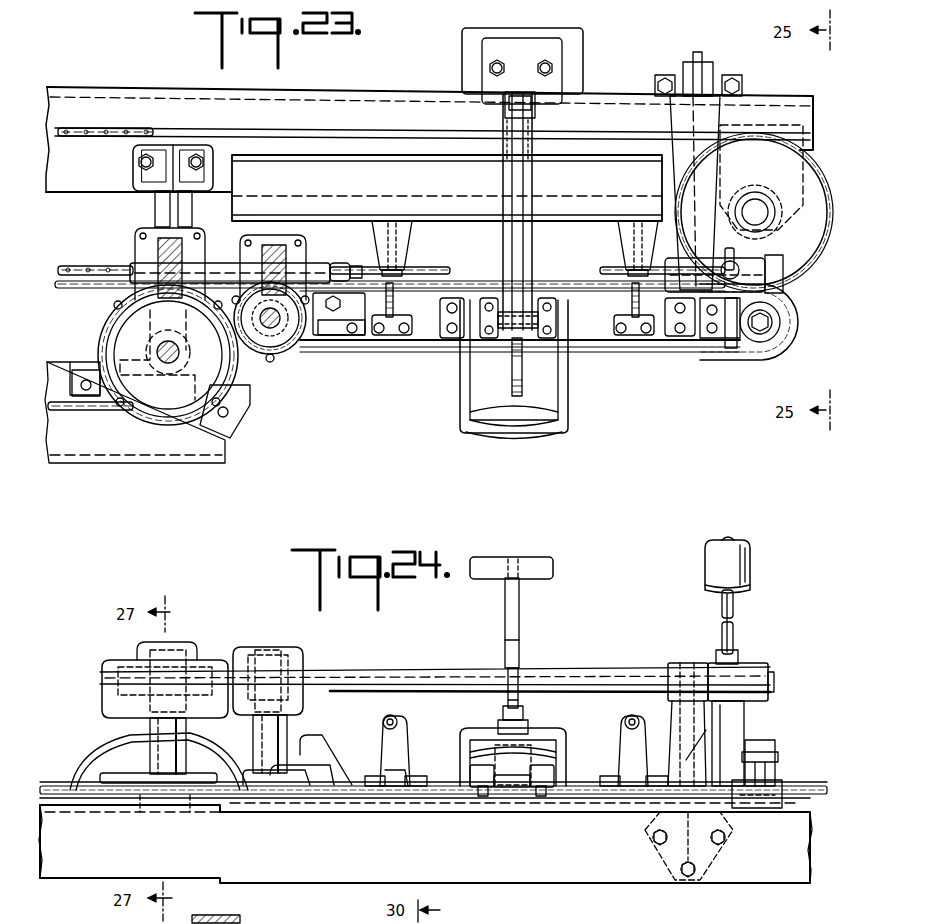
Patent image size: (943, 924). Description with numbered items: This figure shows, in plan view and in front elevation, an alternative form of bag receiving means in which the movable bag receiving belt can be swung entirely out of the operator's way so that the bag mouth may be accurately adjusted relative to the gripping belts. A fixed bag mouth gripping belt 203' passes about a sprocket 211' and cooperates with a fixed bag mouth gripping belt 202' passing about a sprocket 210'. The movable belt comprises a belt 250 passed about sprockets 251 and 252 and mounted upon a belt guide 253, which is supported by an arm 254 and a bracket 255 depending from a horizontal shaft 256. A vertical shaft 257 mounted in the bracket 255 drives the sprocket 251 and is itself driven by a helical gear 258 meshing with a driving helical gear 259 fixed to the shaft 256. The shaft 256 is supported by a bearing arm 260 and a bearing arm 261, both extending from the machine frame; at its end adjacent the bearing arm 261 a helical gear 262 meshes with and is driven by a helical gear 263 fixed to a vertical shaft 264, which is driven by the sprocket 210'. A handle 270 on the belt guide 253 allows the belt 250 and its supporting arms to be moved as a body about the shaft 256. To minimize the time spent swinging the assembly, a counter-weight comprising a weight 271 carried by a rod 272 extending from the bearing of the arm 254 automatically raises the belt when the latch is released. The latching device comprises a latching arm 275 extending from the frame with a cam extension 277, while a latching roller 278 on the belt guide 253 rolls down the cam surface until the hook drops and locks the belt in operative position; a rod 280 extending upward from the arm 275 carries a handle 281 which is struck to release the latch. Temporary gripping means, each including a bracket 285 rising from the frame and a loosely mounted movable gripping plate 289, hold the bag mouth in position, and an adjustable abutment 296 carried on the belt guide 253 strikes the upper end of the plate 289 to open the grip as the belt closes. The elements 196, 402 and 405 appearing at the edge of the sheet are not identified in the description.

In FIG. 24, the guide plate 196 is at (238, 915).
In FIG. 23, the fixed bag mouth gripping belt 202' is at (147, 412).
In FIG. 24, the fixed bag mouth gripping belt 202' is at (143, 716).
In FIG. 23, the fixed bag mouth gripping belt 203' is at (140, 120).
In FIG. 24, the fixed bag mouth gripping belt 203' is at (433, 775).
In FIG. 24, the sprocket 210' is at (158, 809).
In FIG. 23, the sprocket 211' is at (756, 208).
In FIG. 23, the belt 250 is at (392, 346).
In FIG. 24, the sprocket 251 is at (276, 797).
In FIG. 24, the sprocket 252 is at (760, 800).
In FIG. 23, the belt guide 253 is at (433, 340).
In FIG. 23, the arm 254 is at (722, 316).
In FIG. 24, the arm 254 is at (738, 724).
In FIG. 23, the bracket 255 is at (336, 340).
In FIG. 24, the bracket 255 is at (308, 757).
In FIG. 23, the horizontal shaft 256 is at (213, 265).
In FIG. 24, the horizontal shaft 256 is at (378, 678).
In FIG. 23, the vertical shaft 257 is at (268, 330).
In FIG. 23, the helical gear 258 is at (278, 328).
In FIG. 23, the driving helical gear 259 is at (276, 248).
In FIG. 23, the bearing arm 260 is at (700, 117).
In FIG. 24, the bearing arm 260 is at (678, 665).
In FIG. 23, the bearing arm 261 is at (152, 206).
In FIG. 23, the helical gear 262 is at (150, 244).
In FIG. 23, the helical gear 263 is at (132, 329).
In FIG. 23, the vertical shaft 264 is at (180, 352).
In FIG. 23, the handle 270 is at (512, 432).
In FIG. 24, the handle 270 is at (537, 737).
In FIG. 24, the weight 271 is at (750, 570).
In FIG. 23, the rod 272 is at (735, 250).
In FIG. 24, the rod 272 is at (736, 628).
In FIG. 23, the latching arm 275 is at (527, 182).
In FIG. 24, the cam extension 277 is at (521, 688).
In FIG. 23, the latching roller 278 is at (532, 308).
In FIG. 24, the latching roller 278 is at (512, 792).
In FIG. 24, the rod 280 is at (521, 609).
In FIG. 24, the handle 281 is at (540, 564).
In FIG. 23, the bracket 285 is at (408, 245).
In FIG. 24, the movable gripping plate 289 is at (400, 717).
In FIG. 23, the adjustable abutment 296 is at (395, 303).
In FIG. 24, the element 402 is at (318, 918).
In FIG. 24, the element 405 is at (360, 913).